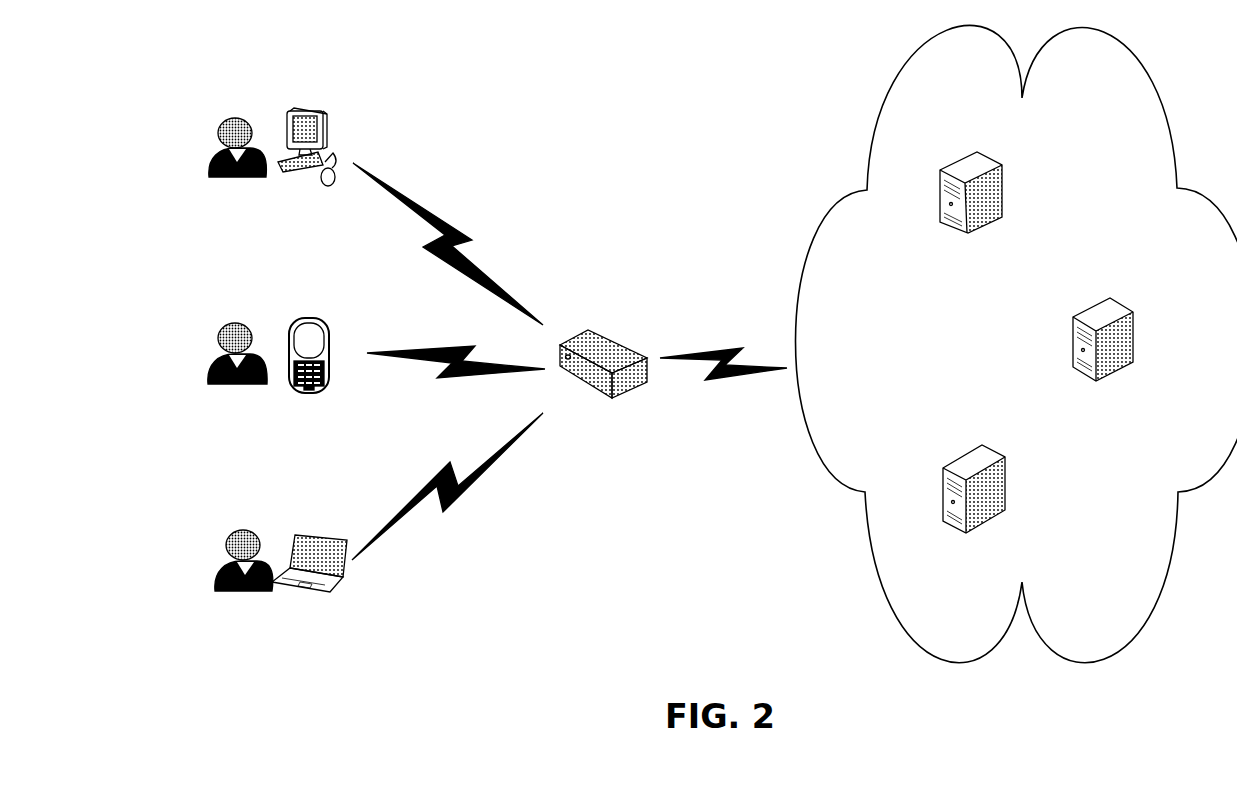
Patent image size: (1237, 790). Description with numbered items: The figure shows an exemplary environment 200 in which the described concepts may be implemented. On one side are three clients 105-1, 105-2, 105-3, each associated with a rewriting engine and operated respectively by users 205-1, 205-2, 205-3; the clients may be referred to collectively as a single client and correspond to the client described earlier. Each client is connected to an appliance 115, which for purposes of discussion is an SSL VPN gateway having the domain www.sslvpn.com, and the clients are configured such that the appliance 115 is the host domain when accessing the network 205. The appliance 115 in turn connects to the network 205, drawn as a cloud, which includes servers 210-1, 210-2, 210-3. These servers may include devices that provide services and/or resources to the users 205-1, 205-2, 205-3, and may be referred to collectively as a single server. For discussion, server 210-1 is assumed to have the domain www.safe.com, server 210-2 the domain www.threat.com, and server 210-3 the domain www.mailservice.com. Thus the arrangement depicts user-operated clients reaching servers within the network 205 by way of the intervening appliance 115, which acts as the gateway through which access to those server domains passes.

The environment 200 is at (458, 68).
The user 205-1 is at (233, 117).
The user 205-2 is at (233, 322).
The user 205-3 is at (238, 530).
The client 105-1 is at (313, 111).
The client 105-2 is at (309, 318).
The client 105-3 is at (305, 534).
The appliance 115 is at (599, 338).
The network 205 is at (1016, 343).
The server 210-1 is at (937, 166).
The server 210-2 is at (1072, 318).
The server 210-3 is at (942, 465).